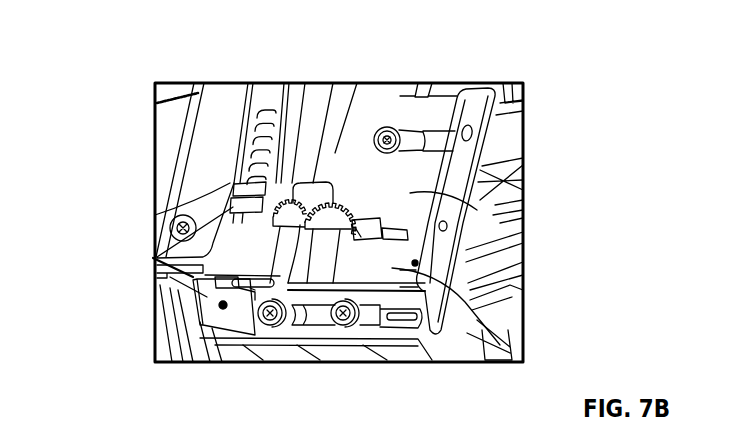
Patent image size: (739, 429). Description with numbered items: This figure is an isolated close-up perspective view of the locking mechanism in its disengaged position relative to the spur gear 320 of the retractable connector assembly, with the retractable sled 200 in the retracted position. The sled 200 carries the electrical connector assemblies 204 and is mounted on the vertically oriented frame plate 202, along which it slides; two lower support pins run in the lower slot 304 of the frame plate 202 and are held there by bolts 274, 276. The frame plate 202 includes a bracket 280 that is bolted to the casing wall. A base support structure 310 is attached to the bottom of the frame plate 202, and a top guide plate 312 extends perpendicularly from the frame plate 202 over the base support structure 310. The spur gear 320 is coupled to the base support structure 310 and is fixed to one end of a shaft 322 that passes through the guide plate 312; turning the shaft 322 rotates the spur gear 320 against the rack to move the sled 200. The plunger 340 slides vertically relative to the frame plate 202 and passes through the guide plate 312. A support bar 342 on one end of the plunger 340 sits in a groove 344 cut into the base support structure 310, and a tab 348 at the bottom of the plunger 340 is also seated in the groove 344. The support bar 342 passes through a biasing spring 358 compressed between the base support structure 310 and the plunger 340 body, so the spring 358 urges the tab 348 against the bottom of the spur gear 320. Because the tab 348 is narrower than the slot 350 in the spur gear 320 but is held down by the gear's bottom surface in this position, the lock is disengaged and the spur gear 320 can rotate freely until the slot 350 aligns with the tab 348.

The retractable sled 200 is at (522, 155).
The frame plate 202 is at (505, 248).
The electrical connector assemblies 204 is at (483, 240).
The bolt 274 is at (288, 335).
The bolt 276 is at (360, 330).
The bracket 280 is at (202, 151).
The lower slot 304 is at (395, 315).
The base support structure 310 is at (507, 338).
The top guide plate 312 is at (245, 102).
The spur gear 320 is at (335, 183).
The shaft 322 is at (340, 96).
The plunger 340 is at (193, 107).
The support bar 342 is at (157, 257).
The groove 344 is at (190, 280).
The tab 348 is at (232, 330).
The slot 350 is at (272, 335).
The biasing spring 358 is at (240, 152).